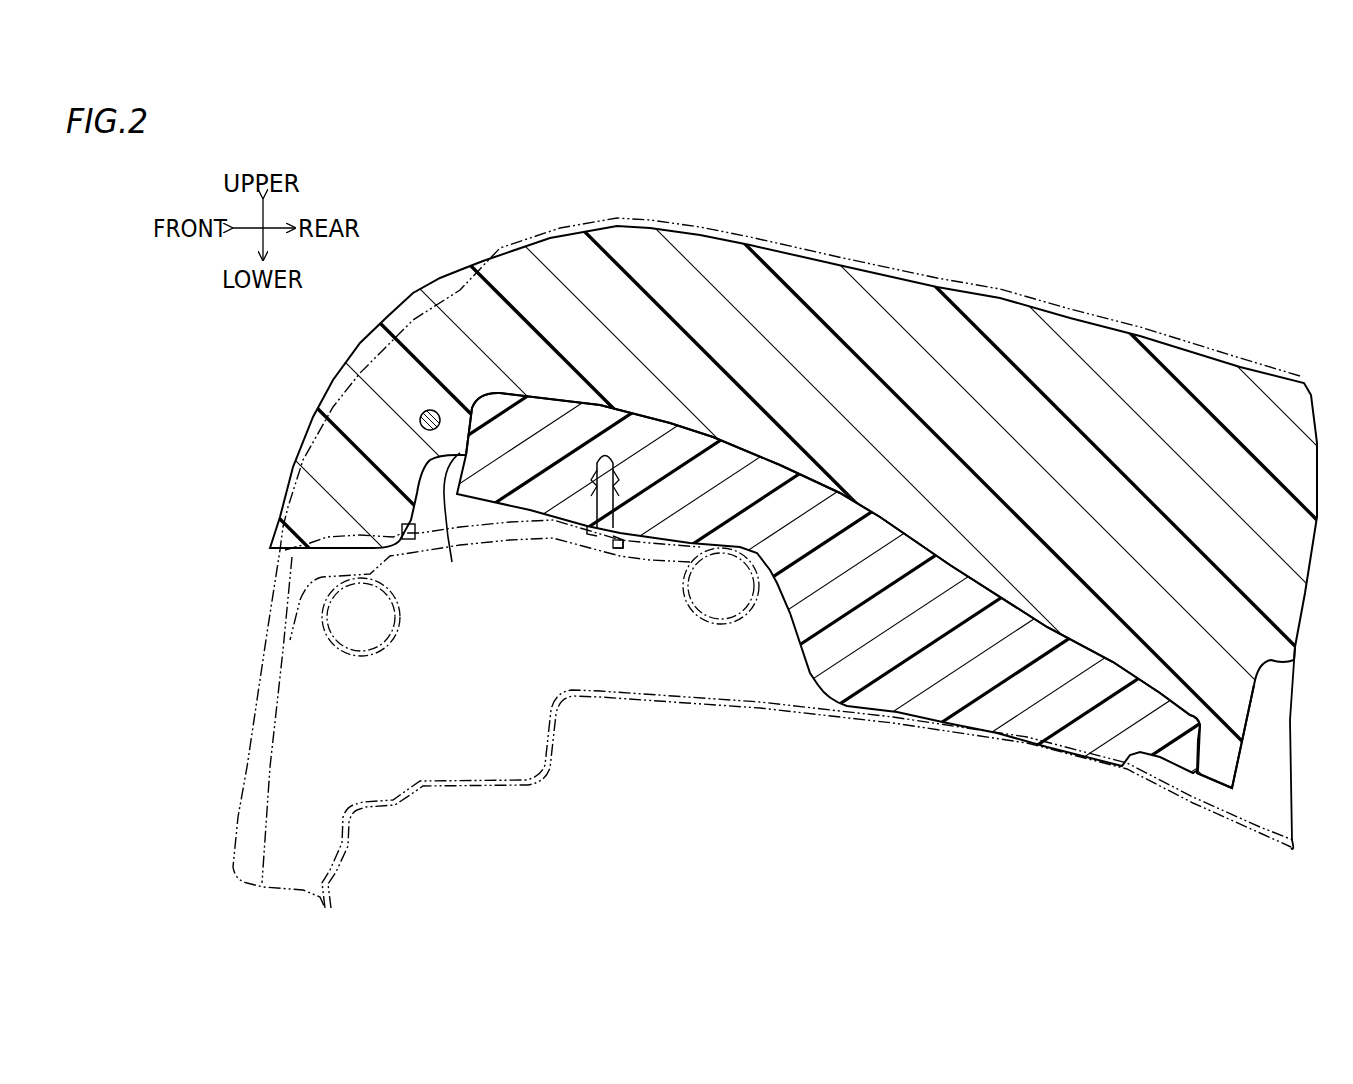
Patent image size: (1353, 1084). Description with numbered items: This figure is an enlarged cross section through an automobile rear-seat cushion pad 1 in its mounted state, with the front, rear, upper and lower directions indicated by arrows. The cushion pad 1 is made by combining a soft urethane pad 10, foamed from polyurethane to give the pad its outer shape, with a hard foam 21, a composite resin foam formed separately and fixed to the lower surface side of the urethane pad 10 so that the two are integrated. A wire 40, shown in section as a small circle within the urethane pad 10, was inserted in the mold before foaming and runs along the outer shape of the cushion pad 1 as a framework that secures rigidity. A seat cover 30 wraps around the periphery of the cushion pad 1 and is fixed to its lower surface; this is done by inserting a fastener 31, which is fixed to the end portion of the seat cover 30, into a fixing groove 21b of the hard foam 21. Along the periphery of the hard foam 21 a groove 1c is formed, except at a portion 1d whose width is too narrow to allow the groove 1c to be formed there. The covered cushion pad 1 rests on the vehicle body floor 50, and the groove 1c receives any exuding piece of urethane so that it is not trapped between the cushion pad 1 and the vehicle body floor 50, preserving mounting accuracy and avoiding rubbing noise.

The cushion pad 1 is at (1160, 297).
The urethane pad 10 is at (887, 268).
The hard foam 21 is at (810, 663).
The fixing groove 21b is at (598, 484).
The seat cover 30 is at (657, 226).
The fastener 31 is at (611, 535).
The wire 40 is at (420, 418).
The vehicle body floor 50 is at (605, 696).
The groove 1c is at (452, 562).
The portion 1d is at (1208, 790).